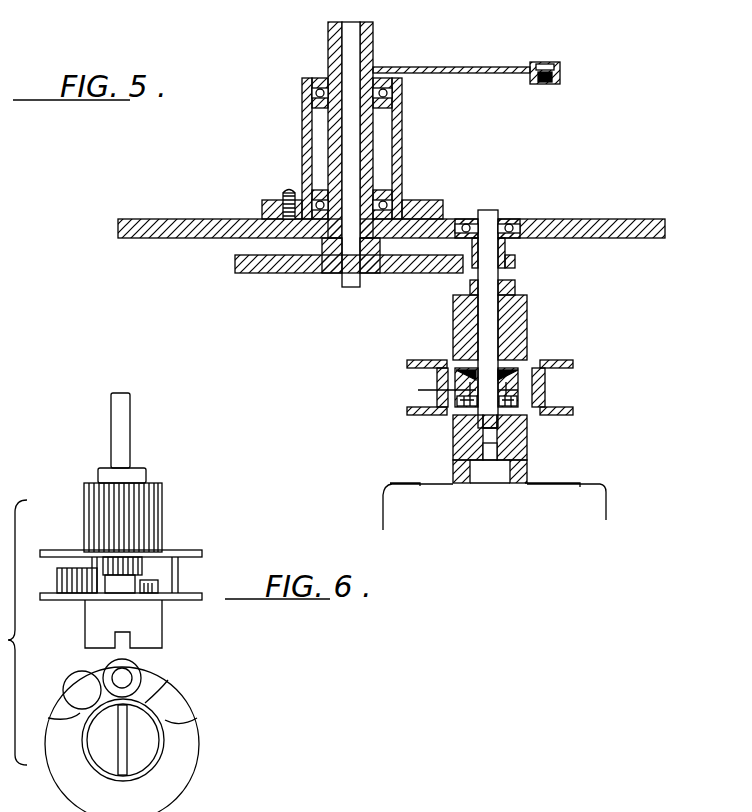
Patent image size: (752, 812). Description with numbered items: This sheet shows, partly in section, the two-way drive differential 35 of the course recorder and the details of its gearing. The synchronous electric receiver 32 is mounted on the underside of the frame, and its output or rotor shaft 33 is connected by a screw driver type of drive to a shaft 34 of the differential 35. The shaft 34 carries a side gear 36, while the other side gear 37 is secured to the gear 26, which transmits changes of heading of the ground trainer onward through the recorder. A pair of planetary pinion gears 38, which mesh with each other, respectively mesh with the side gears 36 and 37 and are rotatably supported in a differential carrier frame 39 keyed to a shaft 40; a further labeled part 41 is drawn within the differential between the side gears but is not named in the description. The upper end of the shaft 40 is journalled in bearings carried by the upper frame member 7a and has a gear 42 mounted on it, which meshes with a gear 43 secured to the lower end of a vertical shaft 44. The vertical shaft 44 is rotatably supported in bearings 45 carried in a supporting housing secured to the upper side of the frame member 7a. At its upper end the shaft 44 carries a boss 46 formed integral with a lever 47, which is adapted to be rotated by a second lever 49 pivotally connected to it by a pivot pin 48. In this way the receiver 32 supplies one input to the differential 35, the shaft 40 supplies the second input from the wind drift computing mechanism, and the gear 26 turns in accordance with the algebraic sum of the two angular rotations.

In FIG. 5, the upper frame member 7a is at (555, 218).
In FIG. 5, the gear 26 is at (520, 292).
In FIG. 6, the gear 26 is at (155, 497).
In FIG. 5, the synchronous electric receiver 32 is at (600, 492).
In FIG. 5, the rotor shaft 33 is at (525, 472).
In FIG. 5, the shaft 34 is at (528, 445).
In FIG. 6, the shaft 34 is at (85, 628).
In FIG. 5, the two-way drive differential 35 is at (596, 358).
In FIG. 5, the side gear 36 is at (548, 390).
In FIG. 6, the side gear 36 is at (160, 590).
In FIG. 5, the side gear 37 is at (540, 360).
In FIG. 6, the side gear 37 is at (168, 550).
In FIG. 5, the planetary pinion gears 38 is at (487, 388).
In FIG. 6, the planetary pinion gears 38 is at (58, 578).
In FIG. 5, the differential carrier frame 39 is at (433, 360).
In FIG. 6, the differential carrier frame 39 is at (204, 550).
In FIG. 5, the shaft 40 is at (482, 305).
In FIG. 6, the shaft 40 is at (131, 452).
In FIG. 5, the pin 41 is at (455, 388).
In FIG. 5, the gear 42 is at (510, 249).
In FIG. 5, the gear 43 is at (423, 273).
In FIG. 5, the vertical shaft 44 is at (350, 288).
In FIG. 5, the bearings 45 is at (402, 120).
In FIG. 5, the boss 46 is at (327, 30).
In FIG. 5, the lever 47 is at (472, 52).
In FIG. 5, the pivot pin 48 is at (545, 62).
In FIG. 5, the second lever 49 is at (562, 72).